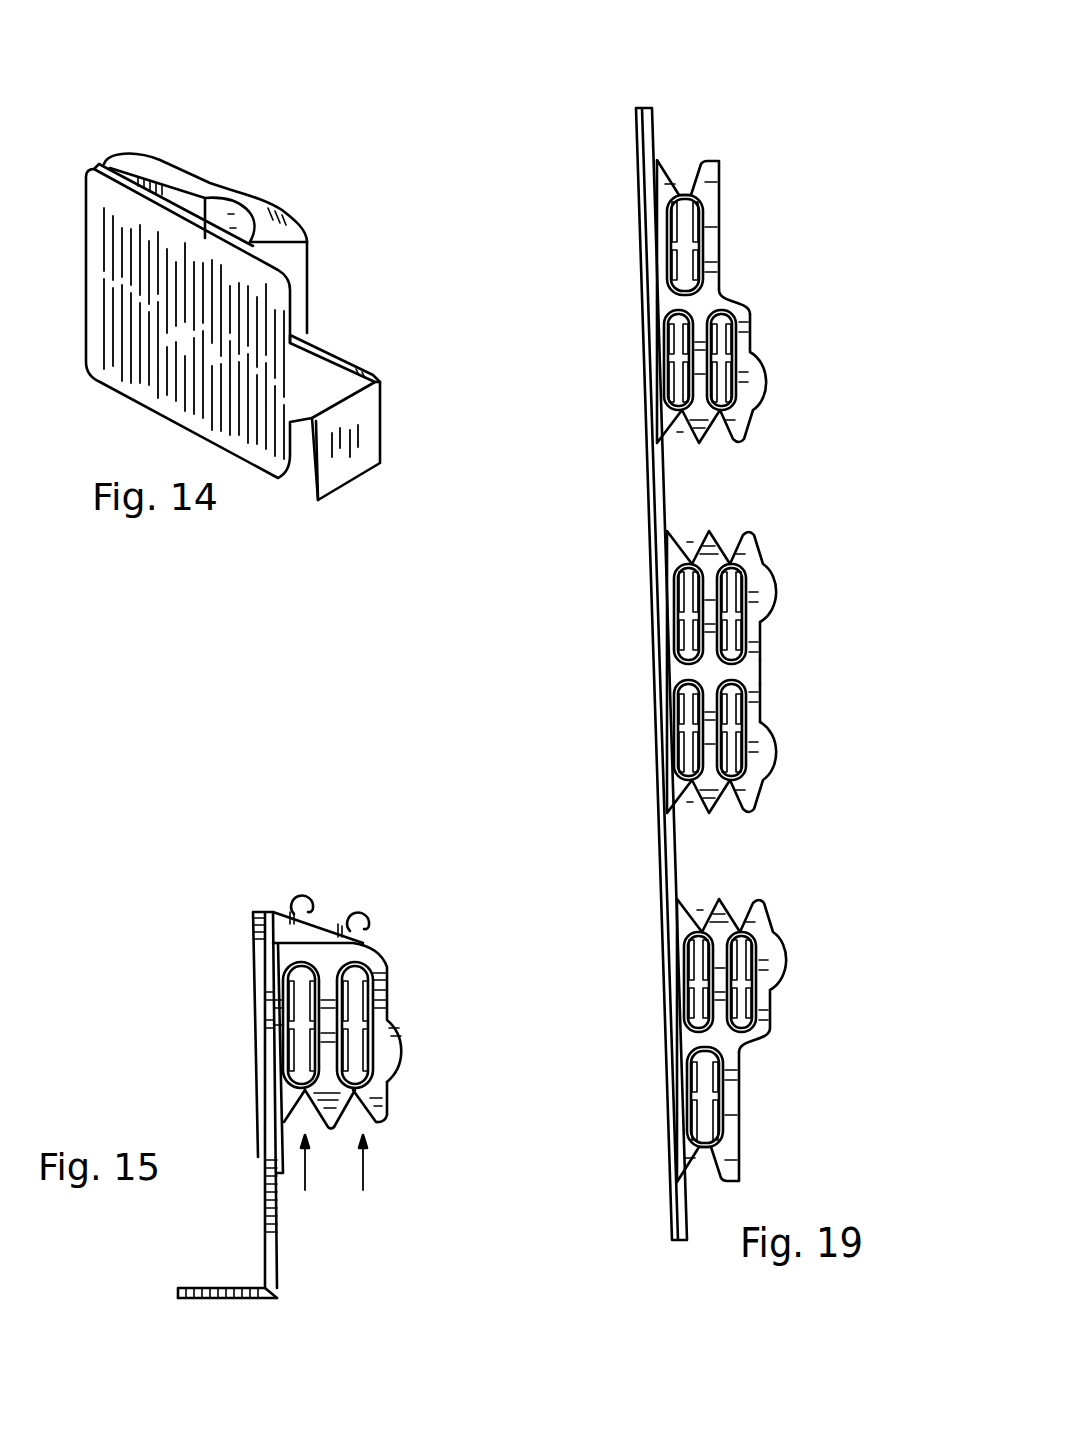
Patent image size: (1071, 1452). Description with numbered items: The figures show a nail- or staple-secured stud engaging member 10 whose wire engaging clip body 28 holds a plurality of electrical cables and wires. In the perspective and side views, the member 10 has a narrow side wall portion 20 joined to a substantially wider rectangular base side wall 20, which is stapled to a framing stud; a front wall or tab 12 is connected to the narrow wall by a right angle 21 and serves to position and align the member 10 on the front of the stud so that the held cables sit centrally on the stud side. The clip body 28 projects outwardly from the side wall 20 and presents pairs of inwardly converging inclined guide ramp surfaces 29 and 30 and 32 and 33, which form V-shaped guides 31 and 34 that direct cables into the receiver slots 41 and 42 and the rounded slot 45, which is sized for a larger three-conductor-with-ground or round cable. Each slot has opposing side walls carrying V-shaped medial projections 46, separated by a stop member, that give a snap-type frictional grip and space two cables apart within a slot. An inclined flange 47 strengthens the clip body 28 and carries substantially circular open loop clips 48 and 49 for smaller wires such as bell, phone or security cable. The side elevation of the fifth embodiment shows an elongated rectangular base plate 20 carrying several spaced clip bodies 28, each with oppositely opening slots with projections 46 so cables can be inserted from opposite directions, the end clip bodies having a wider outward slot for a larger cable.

In FIG. 14, the stud engaging member 10 is at (150, 108).
In FIG. 15, the stud engaging member 10 is at (215, 840).
In FIG. 19, the stud engaging member 10 is at (630, 60).
In FIG. 14, the front wall 12 is at (347, 473).
In FIG. 15, the front wall 12 is at (238, 1300).
In FIG. 14, the side wall 20 is at (353, 290).
In FIG. 15, the side wall 20 is at (322, 1297).
In FIG. 19, the side wall 20 is at (649, 520).
In FIG. 14, the right angle 21 is at (376, 384).
In FIG. 15, the right angle 21 is at (278, 1300).
In FIG. 14, the wire engaging clip body 28 is at (205, 181).
In FIG. 15, the wire engaging clip body 28 is at (387, 960).
In FIG. 19, the wire engaging clip body 28 is at (748, 252).
In FIG. 15, the inclined guide ramp surface 29 is at (293, 1095).
In FIG. 15, the inclined guide ramp surface 30 is at (317, 1120).
In FIG. 15, the V-shaped guide 31 is at (309, 1181).
In FIG. 15, the inclined guide ramp surface 32 is at (350, 1120).
In FIG. 15, the inclined guide ramp surface 33 is at (393, 1087).
In FIG. 15, the V-shaped guide 34 is at (369, 1181).
In FIG. 15, the receiver slot 41 is at (298, 977).
In FIG. 15, the receiver slot 42 is at (362, 973).
In FIG. 15, the rounded slot portion 45 is at (373, 1060).
In FIG. 15, the medial projection 46 is at (293, 1047).
In FIG. 19, the medial projection 46 is at (742, 1065).
In FIG. 15, the inclined flange 47 is at (283, 932).
In FIG. 15, the open loop clip 48 is at (300, 893).
In FIG. 15, the open loop clip 49 is at (352, 905).